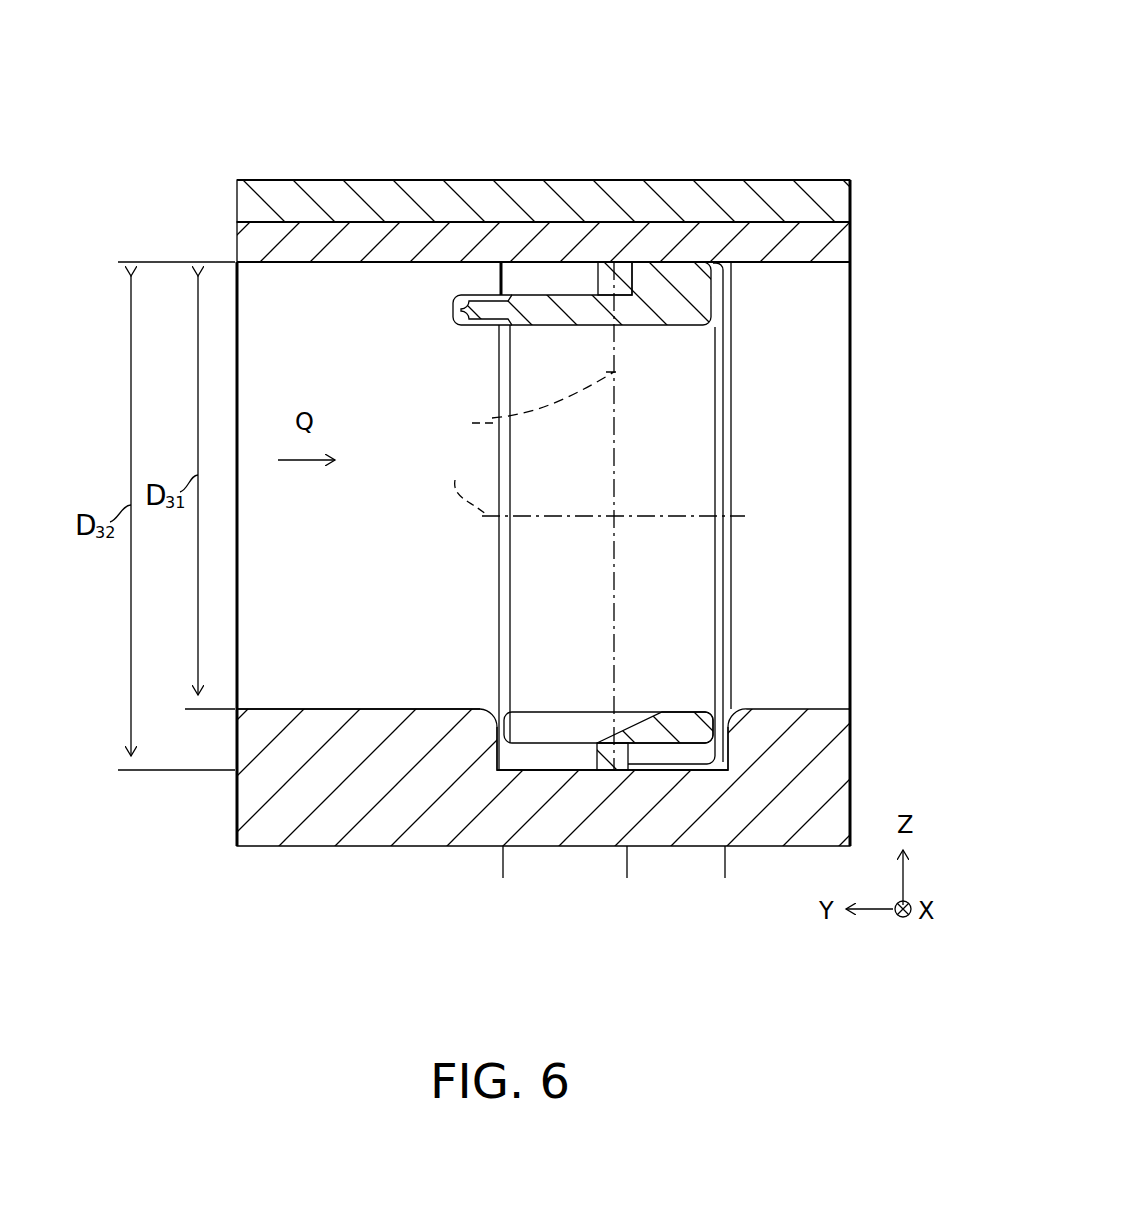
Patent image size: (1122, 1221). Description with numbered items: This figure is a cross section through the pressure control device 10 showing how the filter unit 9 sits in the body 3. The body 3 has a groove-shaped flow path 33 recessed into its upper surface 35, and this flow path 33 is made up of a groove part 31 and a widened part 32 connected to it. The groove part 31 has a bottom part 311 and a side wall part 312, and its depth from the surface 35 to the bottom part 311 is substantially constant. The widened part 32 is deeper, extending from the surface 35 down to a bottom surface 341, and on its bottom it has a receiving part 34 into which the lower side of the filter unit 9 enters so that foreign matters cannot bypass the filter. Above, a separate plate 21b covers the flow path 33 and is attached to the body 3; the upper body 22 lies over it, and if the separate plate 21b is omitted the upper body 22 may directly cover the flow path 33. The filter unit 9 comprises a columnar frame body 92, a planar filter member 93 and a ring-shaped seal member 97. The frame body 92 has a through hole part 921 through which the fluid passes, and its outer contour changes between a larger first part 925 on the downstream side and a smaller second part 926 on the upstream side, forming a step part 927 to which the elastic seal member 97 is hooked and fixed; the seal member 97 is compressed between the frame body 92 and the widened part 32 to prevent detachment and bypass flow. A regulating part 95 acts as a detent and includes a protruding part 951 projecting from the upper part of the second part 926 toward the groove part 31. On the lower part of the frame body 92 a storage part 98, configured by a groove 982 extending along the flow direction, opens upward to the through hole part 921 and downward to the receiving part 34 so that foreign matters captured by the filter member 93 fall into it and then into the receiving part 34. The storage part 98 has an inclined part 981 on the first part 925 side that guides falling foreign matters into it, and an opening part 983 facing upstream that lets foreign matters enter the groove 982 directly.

The pressure control device 10 is at (594, 493).
The body 3 is at (588, 467).
The upper body 22 is at (856, 198).
The separate plate 21b is at (856, 240).
The upper surface 35 is at (832, 262).
The groove-shaped flow path 33 is at (578, 467).
The widened part 32 is at (722, 258).
The groove part 31 is at (788, 258).
The bottom part 311 is at (822, 708).
The side wall part 312 is at (822, 553).
The receiving part 34 is at (538, 752).
The bottom surface 341 is at (667, 770).
The filter unit 9 is at (604, 556).
The seal member 97 is at (611, 258).
The step part 927 is at (628, 262).
The regulating part 95 is at (412, 310).
The protruding part 951 is at (452, 303).
The filter member 93 is at (735, 493).
The storage part 98 is at (559, 657).
The groove 982 is at (540, 706).
The inclined part 981 is at (632, 711).
The opening part 983 is at (513, 727).
The through hole part 921 is at (537, 543).
The frame body 92 is at (614, 911).
The second part 926 is at (627, 876).
The first part 925 is at (676, 887).